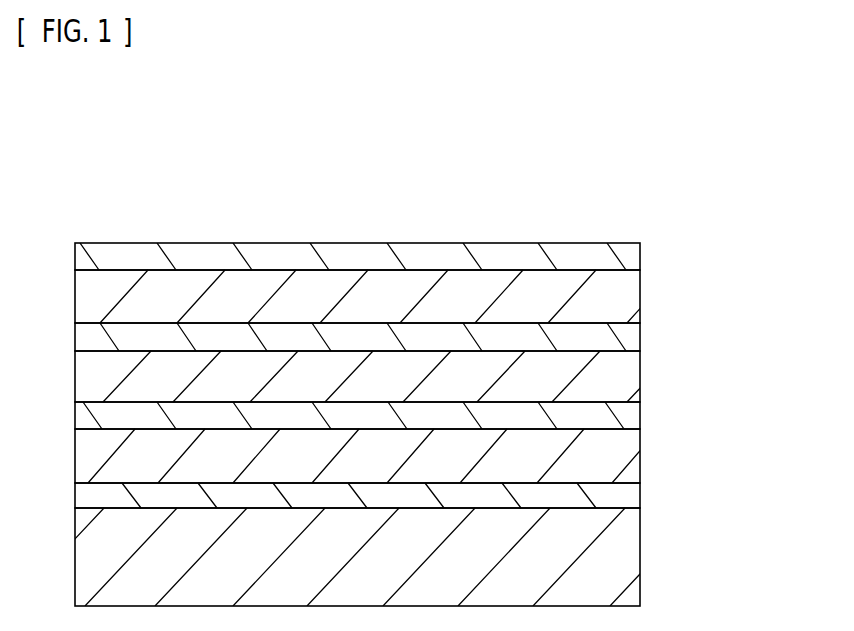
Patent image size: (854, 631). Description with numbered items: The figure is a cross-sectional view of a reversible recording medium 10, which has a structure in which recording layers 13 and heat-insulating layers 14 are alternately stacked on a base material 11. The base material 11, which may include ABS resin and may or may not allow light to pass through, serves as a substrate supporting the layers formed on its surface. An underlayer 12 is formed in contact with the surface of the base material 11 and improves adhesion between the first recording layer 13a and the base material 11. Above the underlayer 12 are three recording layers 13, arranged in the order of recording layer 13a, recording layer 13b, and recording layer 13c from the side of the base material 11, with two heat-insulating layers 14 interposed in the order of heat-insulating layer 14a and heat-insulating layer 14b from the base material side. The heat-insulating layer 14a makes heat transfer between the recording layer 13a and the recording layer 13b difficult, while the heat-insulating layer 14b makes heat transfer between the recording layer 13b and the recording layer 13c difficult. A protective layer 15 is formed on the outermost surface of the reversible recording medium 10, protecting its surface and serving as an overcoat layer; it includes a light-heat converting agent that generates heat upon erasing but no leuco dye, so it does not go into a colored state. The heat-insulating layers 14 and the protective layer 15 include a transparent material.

The reversible recording medium 10 is at (822, 140).
The base material 11 is at (632, 572).
The underlayer 12 is at (632, 498).
The recording layers 13 is at (435, 378).
The recording layer 13a is at (632, 465).
The recording layer 13b is at (632, 373).
The recording layer 13c is at (630, 298).
The heat-insulating layers 14 is at (435, 379).
The heat-insulating layer 14a is at (632, 415).
The heat-insulating layer 14b is at (630, 332).
The protective layer 15 is at (630, 257).